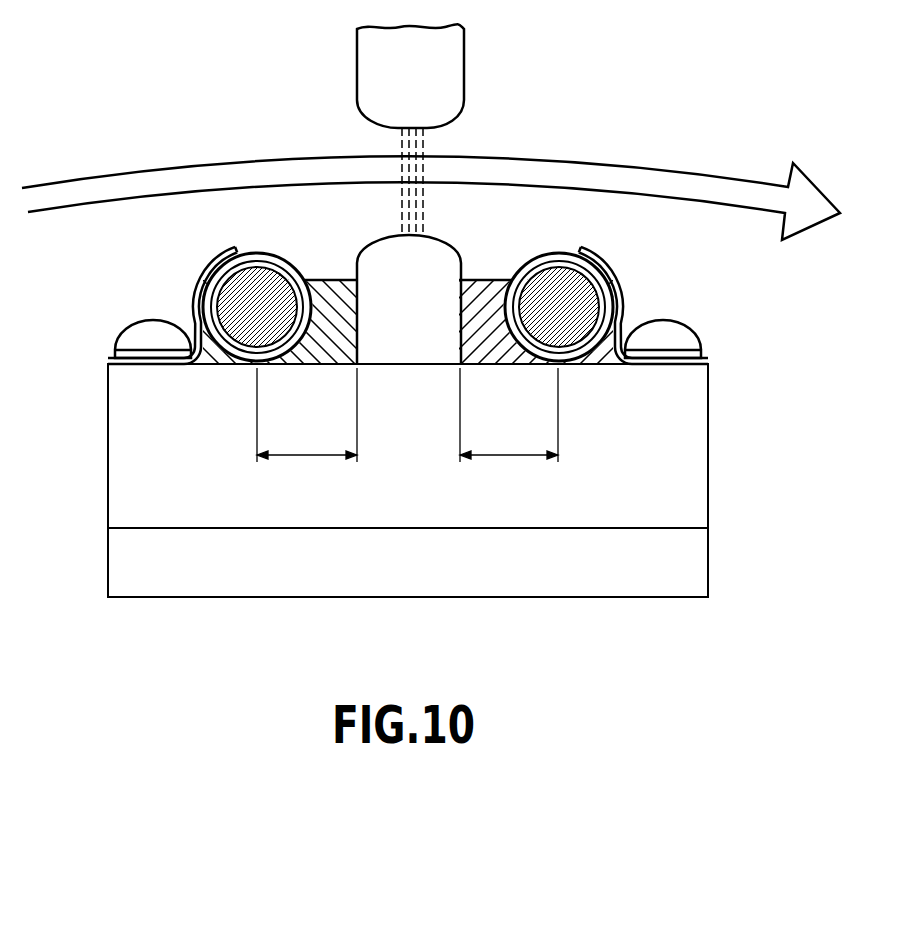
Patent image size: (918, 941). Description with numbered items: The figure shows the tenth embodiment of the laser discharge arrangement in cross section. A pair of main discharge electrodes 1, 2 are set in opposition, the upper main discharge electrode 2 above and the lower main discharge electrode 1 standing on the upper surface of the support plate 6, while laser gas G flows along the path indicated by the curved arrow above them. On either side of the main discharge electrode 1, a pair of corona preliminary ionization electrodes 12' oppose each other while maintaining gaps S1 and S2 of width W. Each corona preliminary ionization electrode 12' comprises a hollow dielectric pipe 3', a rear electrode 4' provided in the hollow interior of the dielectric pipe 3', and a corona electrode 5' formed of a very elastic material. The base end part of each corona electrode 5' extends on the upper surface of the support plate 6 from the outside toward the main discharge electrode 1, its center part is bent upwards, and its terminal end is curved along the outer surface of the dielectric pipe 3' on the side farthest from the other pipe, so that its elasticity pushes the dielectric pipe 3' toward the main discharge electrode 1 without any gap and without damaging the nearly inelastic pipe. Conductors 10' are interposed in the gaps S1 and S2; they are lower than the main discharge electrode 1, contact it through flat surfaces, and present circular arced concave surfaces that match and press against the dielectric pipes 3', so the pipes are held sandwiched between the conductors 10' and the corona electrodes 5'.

The main discharge electrode 1 is at (363, 272).
The main discharge electrode 2 is at (370, 82).
The dielectric pipe 3' is at (397, 285).
The rear electrode 4' is at (406, 344).
The corona electrode 5' is at (408, 299).
The support plate 6 is at (123, 418).
The conductor 10' is at (408, 288).
The corona preliminary ionization electrode 12' is at (409, 315).
The laser gas G is at (808, 195).
The width W is at (407, 415).
The gap S1 is at (343, 372).
The gap S2 is at (479, 372).